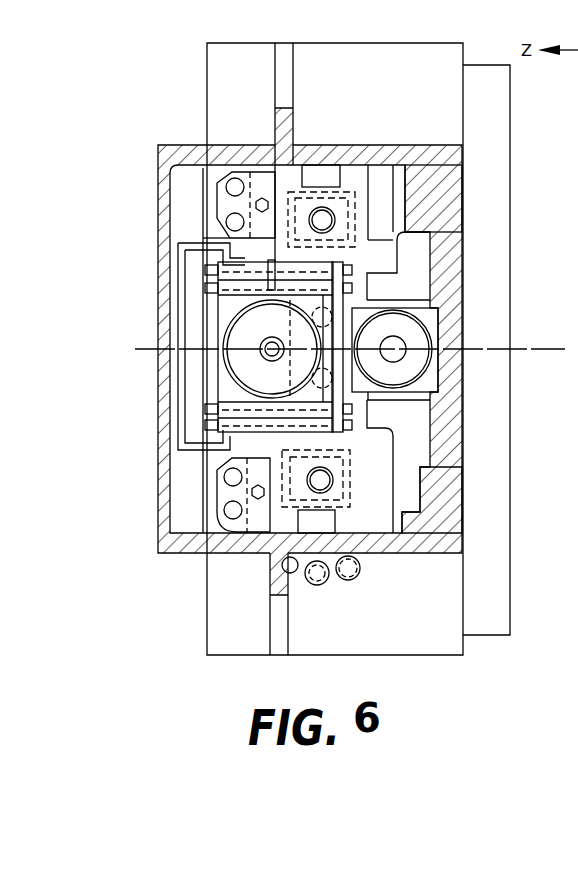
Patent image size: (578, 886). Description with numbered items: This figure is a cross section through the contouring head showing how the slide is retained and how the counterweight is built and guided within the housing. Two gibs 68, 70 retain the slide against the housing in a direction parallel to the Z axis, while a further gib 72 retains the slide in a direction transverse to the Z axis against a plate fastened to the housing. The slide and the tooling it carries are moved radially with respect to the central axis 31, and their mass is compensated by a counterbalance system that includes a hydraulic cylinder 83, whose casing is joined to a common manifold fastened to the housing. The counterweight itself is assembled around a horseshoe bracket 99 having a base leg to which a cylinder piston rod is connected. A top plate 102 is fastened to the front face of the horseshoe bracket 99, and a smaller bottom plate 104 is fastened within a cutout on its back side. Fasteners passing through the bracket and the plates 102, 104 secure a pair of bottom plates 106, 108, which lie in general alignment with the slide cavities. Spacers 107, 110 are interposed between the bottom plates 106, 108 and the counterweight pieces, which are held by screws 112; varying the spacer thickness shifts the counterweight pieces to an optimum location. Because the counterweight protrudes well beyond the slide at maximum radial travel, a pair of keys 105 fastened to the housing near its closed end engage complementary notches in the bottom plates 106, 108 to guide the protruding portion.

The central axis 31 is at (350, 339).
The gib 68 is at (217, 493).
The gib 70 is at (222, 207).
The gib 72 is at (330, 585).
The hydraulic cylinder 83 is at (418, 364).
The horseshoe bracket 99 is at (287, 402).
The top plate 102 is at (190, 373).
The bottom plate 104 is at (340, 303).
The key 105 is at (312, 172).
The bottom plate 106 is at (362, 517).
The spacer 107 is at (356, 478).
The bottom plate 108 is at (385, 172).
The spacer 110 is at (356, 212).
The screw 112 is at (323, 218).